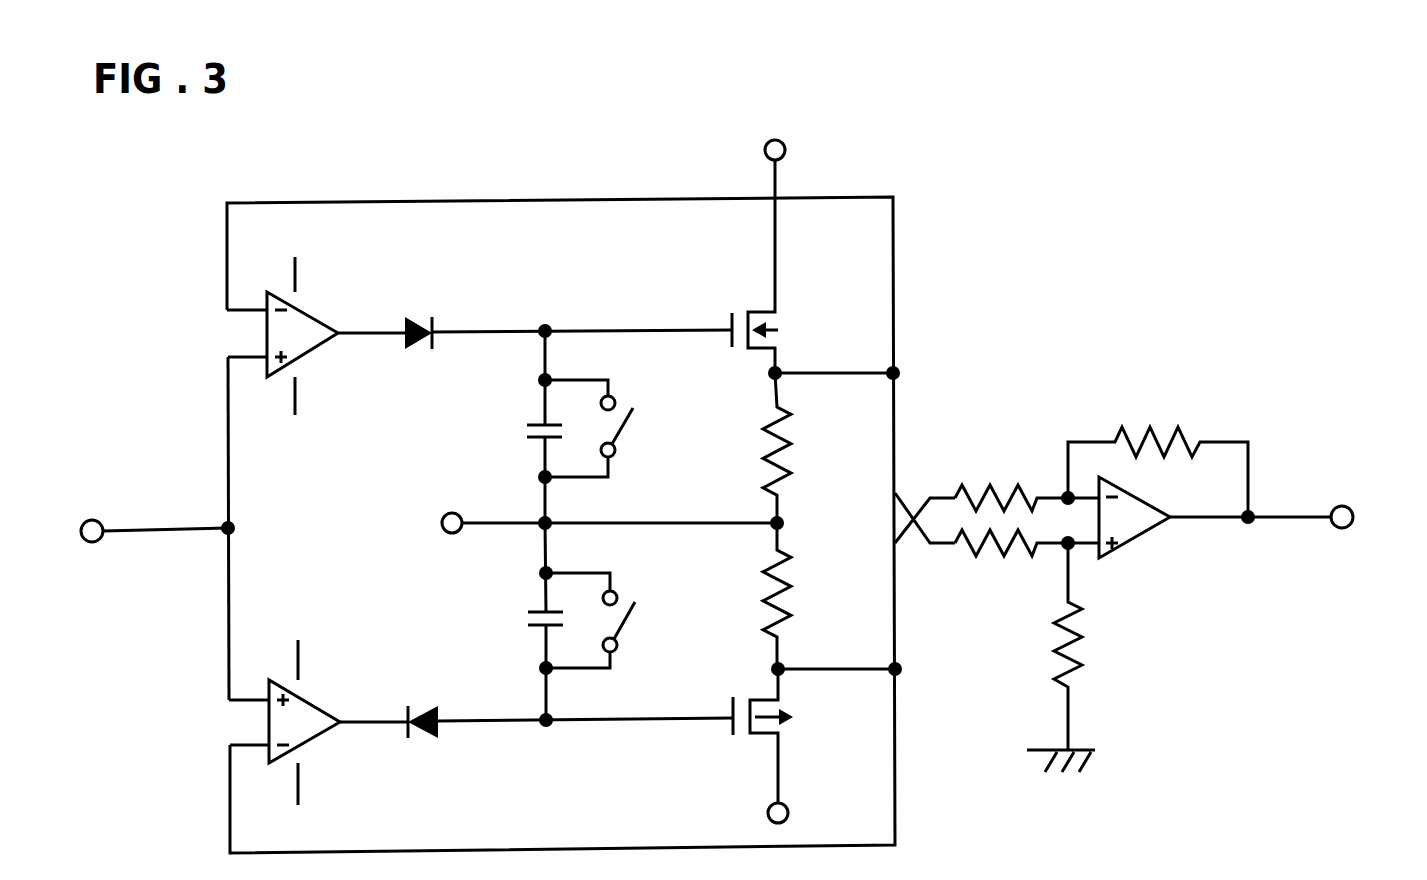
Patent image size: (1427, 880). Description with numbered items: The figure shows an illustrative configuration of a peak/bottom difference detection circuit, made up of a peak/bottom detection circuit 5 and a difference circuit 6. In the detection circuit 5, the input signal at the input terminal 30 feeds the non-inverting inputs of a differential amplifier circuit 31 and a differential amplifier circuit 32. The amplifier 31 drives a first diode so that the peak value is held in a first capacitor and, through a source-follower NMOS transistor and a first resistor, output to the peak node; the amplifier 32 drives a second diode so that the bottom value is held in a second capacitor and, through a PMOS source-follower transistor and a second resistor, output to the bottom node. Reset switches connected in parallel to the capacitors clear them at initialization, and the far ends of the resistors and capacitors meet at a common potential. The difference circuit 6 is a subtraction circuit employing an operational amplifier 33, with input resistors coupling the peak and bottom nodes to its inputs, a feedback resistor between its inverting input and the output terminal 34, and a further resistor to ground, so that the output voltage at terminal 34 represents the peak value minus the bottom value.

The peak/bottom detection circuit 5 is at (566, 114).
The difference circuit 6 is at (1159, 339).
The input terminal 30 is at (98, 543).
The differential amplifier circuit 31 is at (302, 339).
The differential amplifier circuit 32 is at (304, 727).
The differential amplifier circuit 33 is at (1137, 517).
The output terminal 34 is at (1344, 506).